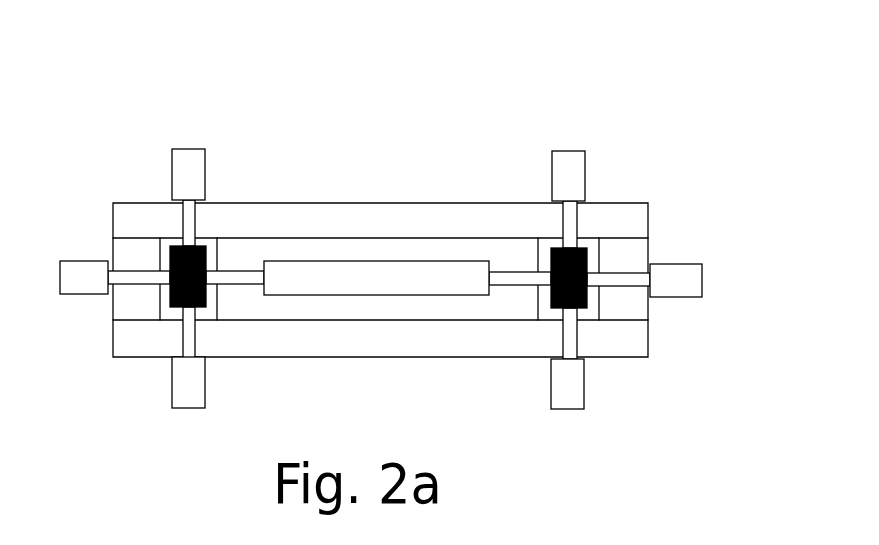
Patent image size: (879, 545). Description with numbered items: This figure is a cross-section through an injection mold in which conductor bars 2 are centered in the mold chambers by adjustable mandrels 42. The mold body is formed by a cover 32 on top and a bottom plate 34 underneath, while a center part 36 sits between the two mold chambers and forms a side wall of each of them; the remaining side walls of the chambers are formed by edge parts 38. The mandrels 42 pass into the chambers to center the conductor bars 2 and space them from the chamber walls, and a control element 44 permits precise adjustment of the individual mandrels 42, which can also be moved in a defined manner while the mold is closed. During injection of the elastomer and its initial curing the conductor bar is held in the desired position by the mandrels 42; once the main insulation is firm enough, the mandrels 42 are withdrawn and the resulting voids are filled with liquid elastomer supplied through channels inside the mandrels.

The conductor bar 2 is at (168, 303).
The cover 32 is at (420, 213).
The bottom plate 34 is at (613, 343).
The center part 36 is at (250, 251).
The edge part 38 is at (620, 258).
The adjustable mandrel 42 is at (568, 225).
The control element 44 is at (82, 277).